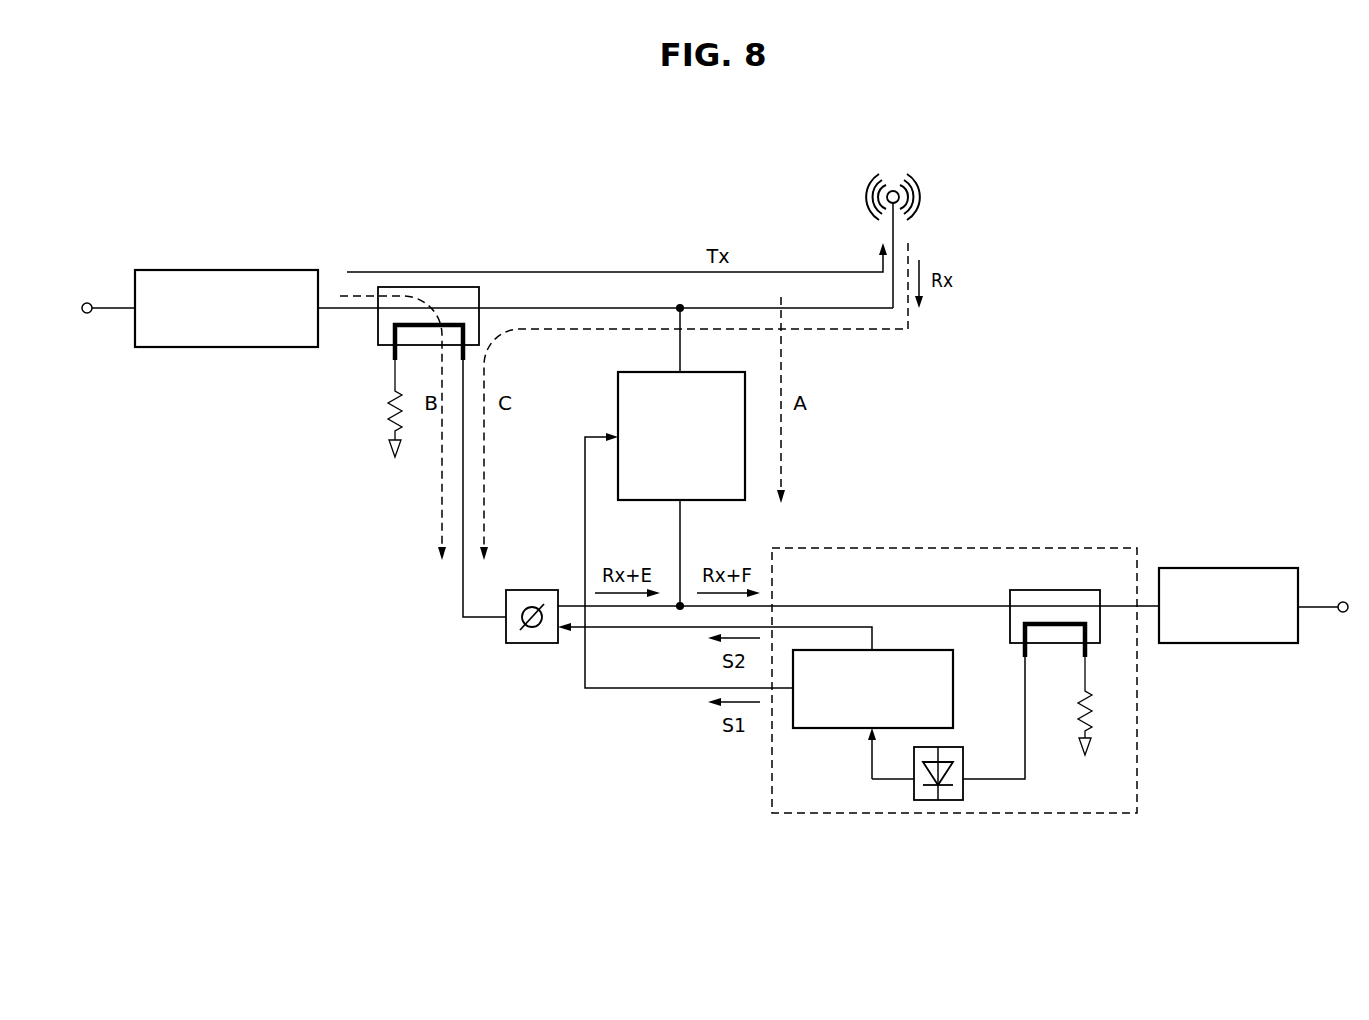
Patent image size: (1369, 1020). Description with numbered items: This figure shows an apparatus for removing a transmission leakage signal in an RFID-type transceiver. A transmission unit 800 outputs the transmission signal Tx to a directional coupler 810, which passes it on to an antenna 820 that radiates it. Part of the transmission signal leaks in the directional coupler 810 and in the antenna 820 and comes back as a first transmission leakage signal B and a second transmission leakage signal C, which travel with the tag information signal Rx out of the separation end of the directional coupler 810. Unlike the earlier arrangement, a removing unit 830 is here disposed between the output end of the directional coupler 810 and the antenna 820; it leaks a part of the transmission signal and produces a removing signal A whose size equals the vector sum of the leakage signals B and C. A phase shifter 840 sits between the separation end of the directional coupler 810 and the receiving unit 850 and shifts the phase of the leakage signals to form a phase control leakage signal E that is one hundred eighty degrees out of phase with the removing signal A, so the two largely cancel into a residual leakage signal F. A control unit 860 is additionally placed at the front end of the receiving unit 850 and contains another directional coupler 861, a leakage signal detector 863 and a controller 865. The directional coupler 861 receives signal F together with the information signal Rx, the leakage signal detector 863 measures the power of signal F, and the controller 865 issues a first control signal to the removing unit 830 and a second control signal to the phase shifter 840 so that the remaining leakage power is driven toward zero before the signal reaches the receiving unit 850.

The transmission unit 800 is at (228, 269).
The directional coupler 810 is at (437, 287).
The antenna 820 is at (913, 173).
The removing unit 830 is at (693, 370).
The phase shifter 840 is at (533, 590).
The receiving unit 850 is at (1232, 567).
The control unit 860 is at (1058, 547).
The directional coupler 861 is at (1060, 588).
The leakage signal detector 863 is at (952, 745).
The controller 865 is at (902, 650).